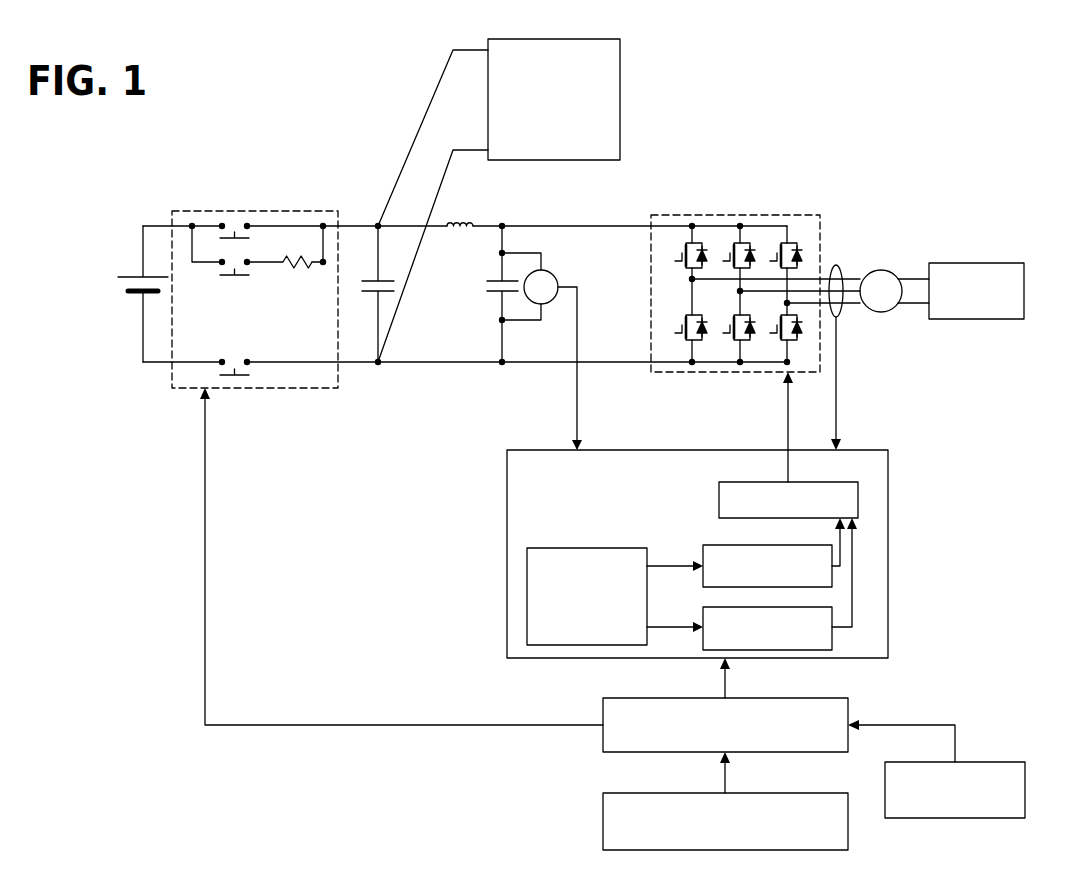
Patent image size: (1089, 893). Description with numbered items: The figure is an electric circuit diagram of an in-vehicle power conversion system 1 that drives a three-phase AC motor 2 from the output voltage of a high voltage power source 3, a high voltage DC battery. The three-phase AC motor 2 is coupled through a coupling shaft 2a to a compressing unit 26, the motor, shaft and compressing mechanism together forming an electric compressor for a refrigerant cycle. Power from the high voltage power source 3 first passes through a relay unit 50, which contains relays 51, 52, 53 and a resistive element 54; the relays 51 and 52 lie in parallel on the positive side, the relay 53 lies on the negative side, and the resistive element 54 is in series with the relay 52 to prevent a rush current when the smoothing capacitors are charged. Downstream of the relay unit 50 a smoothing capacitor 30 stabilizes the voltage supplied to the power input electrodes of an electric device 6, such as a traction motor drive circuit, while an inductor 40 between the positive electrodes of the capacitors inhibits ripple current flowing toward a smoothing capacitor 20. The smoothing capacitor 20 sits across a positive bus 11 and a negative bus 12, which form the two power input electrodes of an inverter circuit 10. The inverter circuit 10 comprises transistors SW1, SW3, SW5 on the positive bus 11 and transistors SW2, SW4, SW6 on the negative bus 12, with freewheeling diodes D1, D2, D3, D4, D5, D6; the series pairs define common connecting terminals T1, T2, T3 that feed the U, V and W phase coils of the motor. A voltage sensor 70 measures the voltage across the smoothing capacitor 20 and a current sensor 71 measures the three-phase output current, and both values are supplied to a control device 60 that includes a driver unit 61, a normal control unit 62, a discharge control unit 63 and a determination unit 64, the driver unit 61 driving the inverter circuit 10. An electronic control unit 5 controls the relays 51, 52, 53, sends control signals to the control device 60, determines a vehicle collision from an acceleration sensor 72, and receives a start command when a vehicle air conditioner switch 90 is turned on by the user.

The in-vehicle power conversion system 1 is at (235, 757).
The three-phase AC motor 2 is at (885, 270).
The coupling shaft 2a is at (913, 303).
The high voltage power source 3 is at (130, 277).
The electronic control unit 5 is at (848, 707).
The electric device 6 is at (620, 62).
The inverter circuit 10 is at (822, 245).
The positive bus 11 is at (772, 230).
The negative bus 12 is at (660, 372).
The smoothing capacitor 20 is at (495, 291).
The compressing unit 26 is at (1024, 272).
The smoothing capacitor 30 is at (383, 281).
The inductor 40 is at (458, 232).
The relay unit 50 is at (185, 211).
The relay 51 is at (233, 224).
The relay 52 is at (240, 278).
The relay 53 is at (238, 378).
The resistive element 54 is at (302, 270).
The control device 60 is at (888, 468).
The driver unit 61 is at (858, 500).
The normal control unit 62 is at (716, 545).
The discharge control unit 63 is at (716, 607).
The determination unit 64 is at (527, 572).
The voltage sensor 70 is at (553, 275).
The current sensor 71 is at (838, 317).
The acceleration sensor 72 is at (1025, 787).
The vehicle air conditioner switch 90 is at (603, 815).
The transistor SW1 is at (687, 242).
The transistor SW2 is at (684, 316).
The transistor SW3 is at (733, 243).
The transistor SW4 is at (730, 340).
The transistor SW5 is at (780, 243).
The transistor SW6 is at (778, 340).
The freewheeling diode D1 is at (704, 243).
The freewheeling diode D2 is at (702, 313).
The freewheeling diode D3 is at (751, 243).
The freewheeling diode D4 is at (750, 340).
The freewheeling diode D5 is at (800, 243).
The freewheeling diode D6 is at (798, 340).
The common connecting terminal T1 is at (692, 278).
The common connecting terminal T2 is at (735, 291).
The common connecting terminal T3 is at (792, 305).